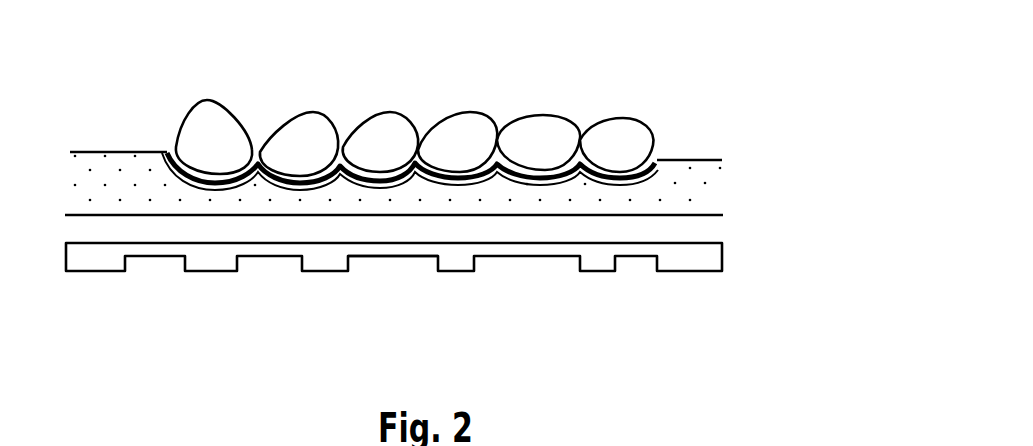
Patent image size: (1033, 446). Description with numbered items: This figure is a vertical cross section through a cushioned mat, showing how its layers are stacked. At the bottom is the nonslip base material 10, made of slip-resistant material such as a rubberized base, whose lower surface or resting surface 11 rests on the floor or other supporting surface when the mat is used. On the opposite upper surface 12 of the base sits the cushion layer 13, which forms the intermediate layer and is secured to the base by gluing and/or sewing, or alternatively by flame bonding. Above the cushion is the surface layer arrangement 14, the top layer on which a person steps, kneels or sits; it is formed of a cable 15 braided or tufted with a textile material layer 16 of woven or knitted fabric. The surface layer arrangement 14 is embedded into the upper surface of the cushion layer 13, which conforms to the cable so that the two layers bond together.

The nonslip base material 10 is at (731, 265).
The lower surface or resting surface 11 is at (385, 257).
The upper surface 12 is at (678, 207).
The cushion layer 13 is at (731, 178).
The surface layer arrangement 14 is at (731, 138).
The cable 15 is at (390, 150).
The textile material layer 16 is at (655, 148).